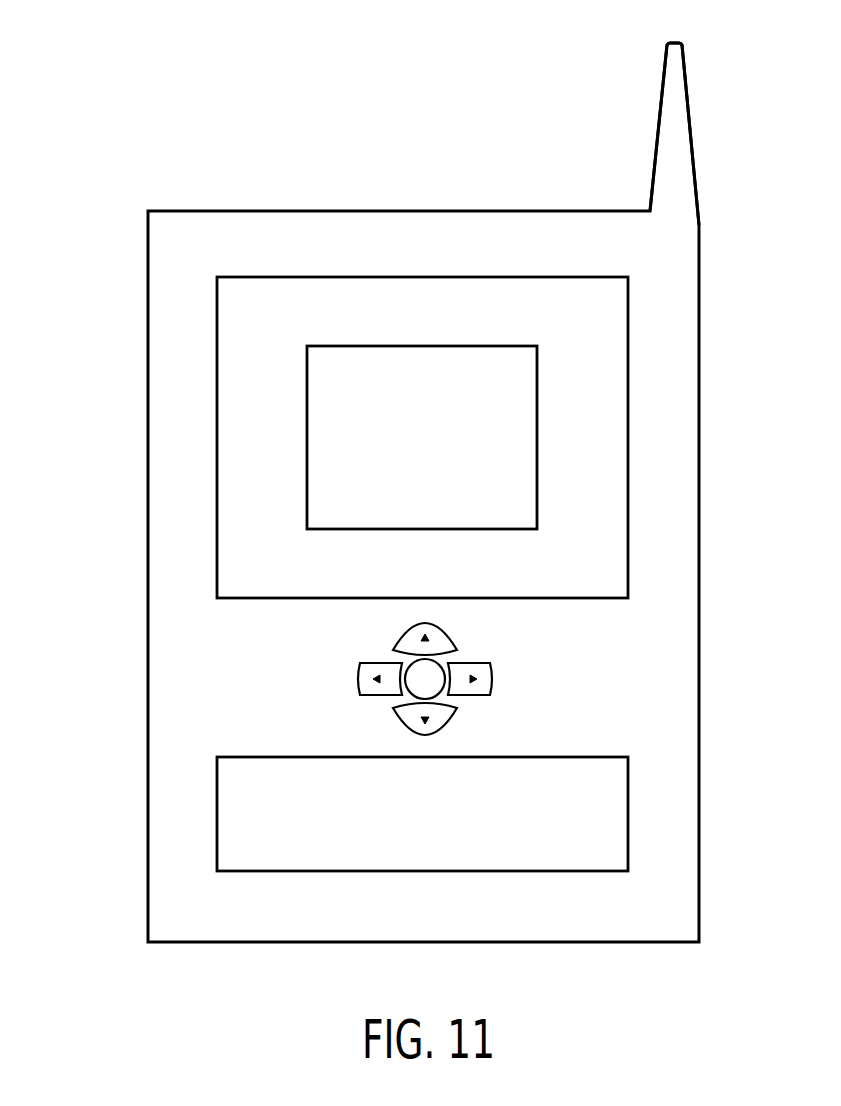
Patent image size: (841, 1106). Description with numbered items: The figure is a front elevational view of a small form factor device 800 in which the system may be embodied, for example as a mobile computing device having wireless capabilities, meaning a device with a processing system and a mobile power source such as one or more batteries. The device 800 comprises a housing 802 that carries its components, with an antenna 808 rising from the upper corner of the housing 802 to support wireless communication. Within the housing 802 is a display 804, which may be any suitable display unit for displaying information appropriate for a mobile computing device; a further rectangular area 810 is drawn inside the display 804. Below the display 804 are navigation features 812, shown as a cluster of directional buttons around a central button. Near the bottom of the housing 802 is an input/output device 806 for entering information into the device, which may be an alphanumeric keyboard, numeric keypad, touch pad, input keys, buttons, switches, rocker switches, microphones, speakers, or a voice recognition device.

The small form factor device 800 is at (152, 150).
The housing 802 is at (148, 668).
The display 804 is at (628, 334).
The input/output (I/O) device 806 is at (628, 814).
The antenna 808 is at (658, 127).
The display screen 810 is at (423, 346).
The navigation features 812 is at (525, 680).